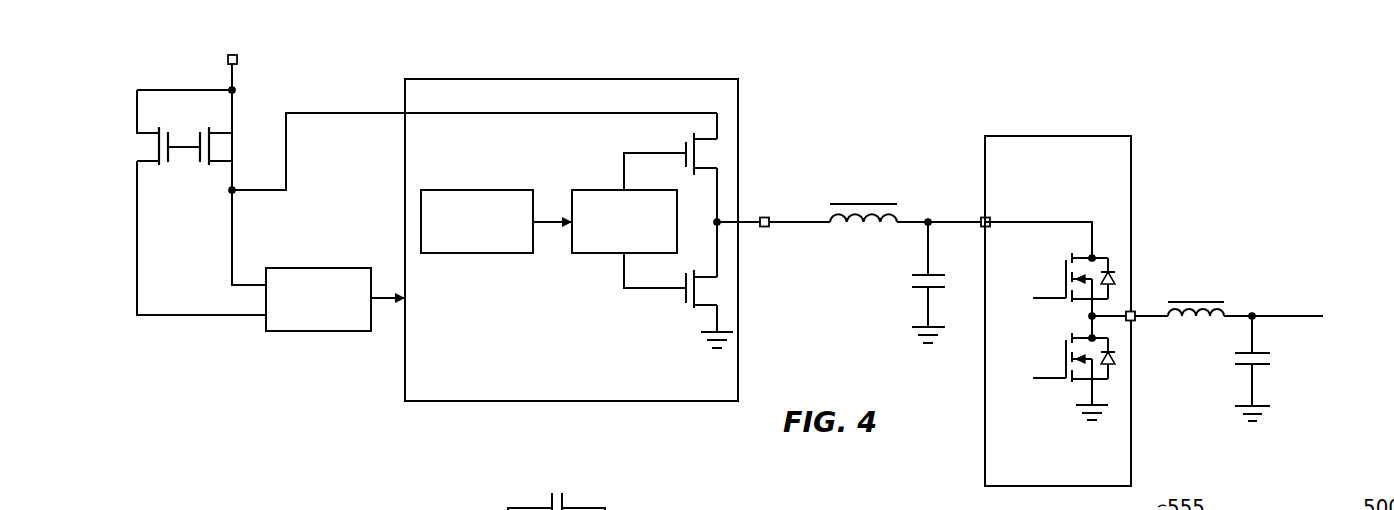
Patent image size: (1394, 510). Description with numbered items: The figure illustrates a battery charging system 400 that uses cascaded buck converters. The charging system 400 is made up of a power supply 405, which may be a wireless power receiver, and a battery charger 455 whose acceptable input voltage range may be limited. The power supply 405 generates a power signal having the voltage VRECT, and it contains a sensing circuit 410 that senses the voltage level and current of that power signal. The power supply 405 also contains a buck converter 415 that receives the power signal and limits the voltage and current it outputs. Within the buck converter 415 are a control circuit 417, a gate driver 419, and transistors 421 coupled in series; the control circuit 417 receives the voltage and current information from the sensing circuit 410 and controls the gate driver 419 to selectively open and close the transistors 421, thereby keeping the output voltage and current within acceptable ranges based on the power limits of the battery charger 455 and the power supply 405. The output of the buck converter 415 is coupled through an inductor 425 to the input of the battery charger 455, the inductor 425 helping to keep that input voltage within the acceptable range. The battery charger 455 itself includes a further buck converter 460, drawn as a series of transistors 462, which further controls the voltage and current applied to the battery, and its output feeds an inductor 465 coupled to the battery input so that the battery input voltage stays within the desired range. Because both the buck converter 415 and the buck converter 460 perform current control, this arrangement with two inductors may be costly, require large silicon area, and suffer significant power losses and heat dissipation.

The battery charging system 400 is at (1318, 118).
The power supply 405 is at (782, 78).
The sensing circuit 410 is at (312, 268).
The buck converter 415 is at (580, 79).
The control circuit 417 is at (457, 190).
The gate driver 419 is at (602, 253).
The transistors 421 is at (685, 148).
The inductor 425 is at (862, 204).
The battery charger 455 is at (1134, 120).
The buck converter 460 is at (1120, 245).
The transistors 462 is at (1047, 298).
The inductor 465 is at (1190, 302).